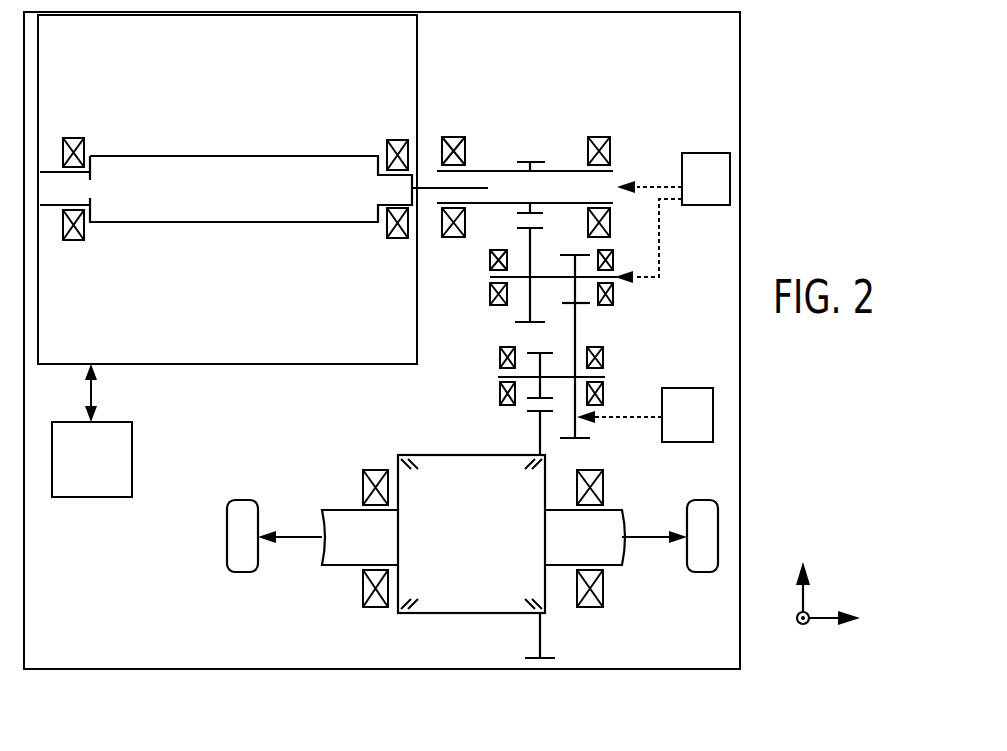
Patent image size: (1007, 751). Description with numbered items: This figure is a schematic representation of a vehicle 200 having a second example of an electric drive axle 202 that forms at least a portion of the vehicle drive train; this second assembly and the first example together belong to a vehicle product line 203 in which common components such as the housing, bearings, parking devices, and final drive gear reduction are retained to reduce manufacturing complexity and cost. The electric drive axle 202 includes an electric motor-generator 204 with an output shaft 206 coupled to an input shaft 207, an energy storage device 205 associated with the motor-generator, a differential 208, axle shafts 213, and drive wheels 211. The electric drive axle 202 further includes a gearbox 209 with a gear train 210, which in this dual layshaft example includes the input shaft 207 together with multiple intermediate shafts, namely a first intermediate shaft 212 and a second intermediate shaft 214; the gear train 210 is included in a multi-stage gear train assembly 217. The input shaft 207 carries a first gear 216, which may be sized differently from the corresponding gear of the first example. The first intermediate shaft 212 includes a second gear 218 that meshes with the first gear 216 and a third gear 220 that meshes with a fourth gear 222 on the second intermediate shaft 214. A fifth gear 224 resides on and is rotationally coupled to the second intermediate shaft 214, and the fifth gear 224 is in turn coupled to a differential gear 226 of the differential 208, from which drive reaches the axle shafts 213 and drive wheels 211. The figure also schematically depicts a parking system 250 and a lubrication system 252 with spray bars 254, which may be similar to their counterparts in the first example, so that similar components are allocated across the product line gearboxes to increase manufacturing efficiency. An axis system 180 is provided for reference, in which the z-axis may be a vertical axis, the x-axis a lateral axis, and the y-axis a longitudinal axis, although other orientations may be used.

The axis system 180 is at (836, 581).
The vehicle 200 is at (740, 55).
The electric drive axle 202 is at (688, 55).
The vehicle product line 203 is at (828, 55).
The electric motor-generator 204 is at (417, 60).
The energy storage device 205 is at (132, 457).
The output shaft 206 is at (425, 192).
The input shaft 207 is at (492, 171).
The differential 208 is at (455, 455).
The gearbox 209 is at (539, 70).
The gear train 210 is at (669, 112).
The drive wheels 211 is at (703, 572).
The first intermediate shaft 212 is at (614, 272).
The axle shafts 213 is at (612, 567).
The second intermediate shaft 214 is at (600, 377).
The first gear 216 is at (533, 164).
The multi-stage gear train assembly 217 is at (641, 67).
The second gear 218 is at (535, 250).
The third gear 220 is at (575, 296).
The fourth gear 222 is at (577, 325).
The fifth gear 224 is at (553, 340).
The differential gear 226 is at (540, 420).
The parking system 250 is at (688, 388).
The lubrication system 252 is at (714, 205).
The spray bars 254 is at (657, 185).